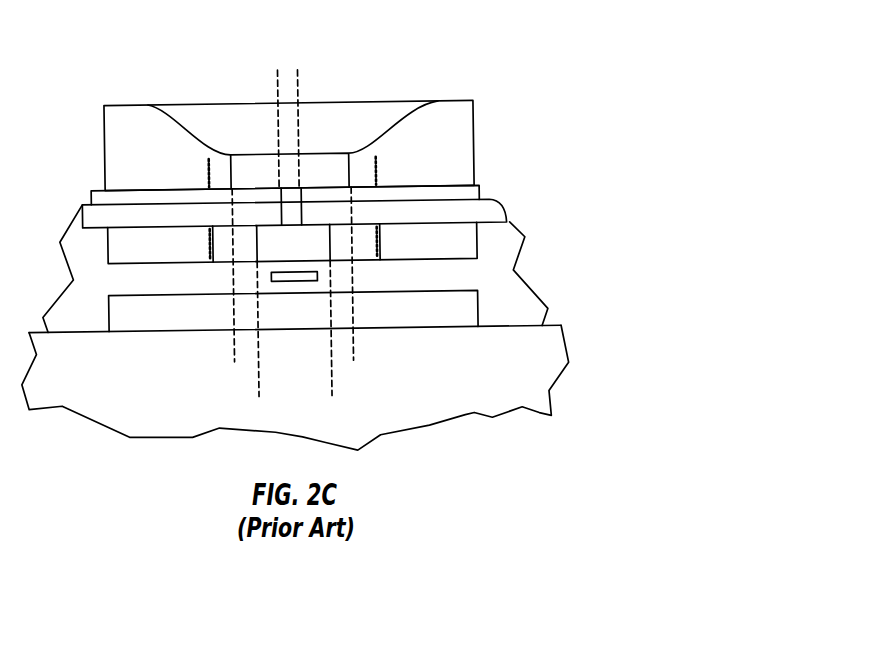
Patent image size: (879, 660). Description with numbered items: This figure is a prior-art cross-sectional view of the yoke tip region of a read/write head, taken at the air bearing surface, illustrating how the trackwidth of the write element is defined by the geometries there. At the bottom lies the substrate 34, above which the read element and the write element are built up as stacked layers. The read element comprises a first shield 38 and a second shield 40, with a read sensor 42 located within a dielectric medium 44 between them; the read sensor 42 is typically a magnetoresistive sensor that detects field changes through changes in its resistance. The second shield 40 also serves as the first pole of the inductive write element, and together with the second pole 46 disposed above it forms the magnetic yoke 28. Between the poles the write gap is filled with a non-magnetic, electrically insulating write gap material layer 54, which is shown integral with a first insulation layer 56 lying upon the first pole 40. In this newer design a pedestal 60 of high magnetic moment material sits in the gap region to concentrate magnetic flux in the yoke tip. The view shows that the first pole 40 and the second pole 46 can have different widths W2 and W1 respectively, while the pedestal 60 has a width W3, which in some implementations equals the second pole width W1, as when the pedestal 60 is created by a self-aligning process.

The magnetic yoke 28 is at (474, 81).
The substrate 34 is at (417, 409).
The first shield 38 is at (432, 312).
The first pole 40 is at (128, 253).
The read sensor 42 is at (271, 277).
The dielectric medium 44 is at (487, 283).
The second pole 46 is at (377, 114).
The write gap material layer 54 is at (479, 190).
The first insulation layer 56 is at (484, 215).
The pedestal 60 is at (293, 211).
The width of second pole W1 is at (380, 347).
The width of first pole W2 is at (362, 394).
The width of pedestal W3 is at (327, 68).